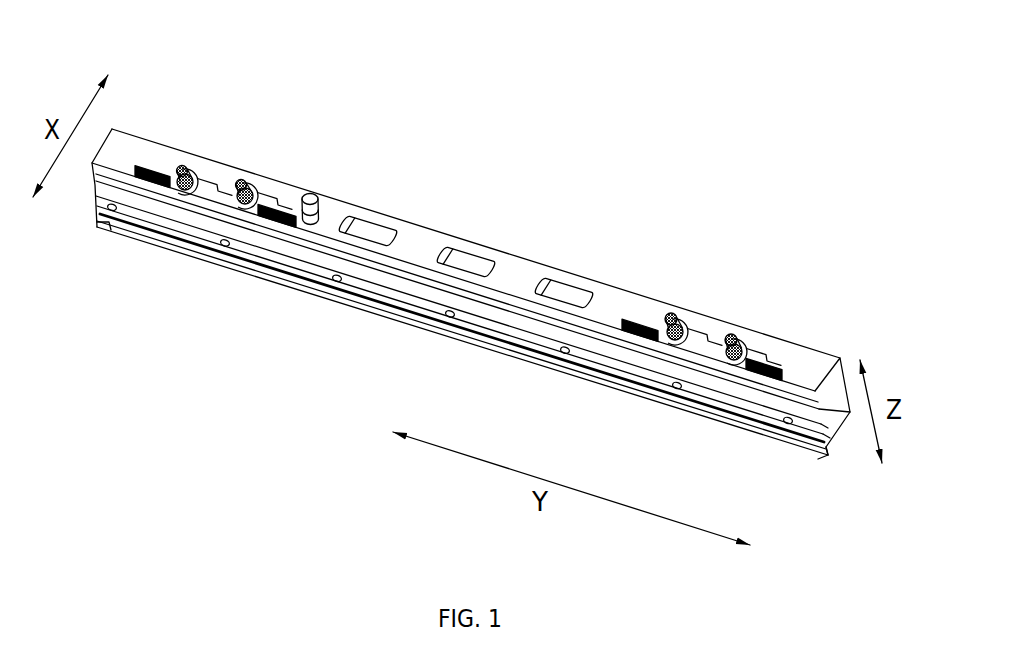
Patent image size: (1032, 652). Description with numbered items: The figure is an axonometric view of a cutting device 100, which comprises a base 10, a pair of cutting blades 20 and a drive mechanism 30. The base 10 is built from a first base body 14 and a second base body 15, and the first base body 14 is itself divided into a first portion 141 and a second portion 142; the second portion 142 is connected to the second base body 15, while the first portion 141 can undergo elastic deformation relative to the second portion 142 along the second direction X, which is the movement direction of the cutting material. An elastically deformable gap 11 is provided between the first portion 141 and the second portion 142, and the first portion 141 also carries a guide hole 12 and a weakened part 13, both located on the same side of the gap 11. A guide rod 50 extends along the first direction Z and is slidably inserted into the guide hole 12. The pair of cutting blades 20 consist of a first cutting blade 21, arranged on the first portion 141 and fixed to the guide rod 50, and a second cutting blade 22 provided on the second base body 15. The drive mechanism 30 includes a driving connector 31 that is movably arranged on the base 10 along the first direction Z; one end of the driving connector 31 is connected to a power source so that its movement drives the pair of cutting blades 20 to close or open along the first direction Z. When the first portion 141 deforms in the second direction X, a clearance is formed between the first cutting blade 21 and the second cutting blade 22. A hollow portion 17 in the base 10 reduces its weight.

The cutting device 100 is at (494, 58).
The base 10 is at (841, 340).
The gap 11 is at (218, 188).
The guide hole 12 is at (682, 317).
The weakened part 13 is at (150, 193).
The first base body 14 is at (167, 155).
The first portion 141 is at (204, 194).
The second portion 142 is at (280, 186).
The second base body 15 is at (832, 414).
The hollow portion 17 is at (397, 218).
The pair of cutting blades 20 is at (324, 379).
The first cutting blade 21 is at (280, 263).
The second cutting blade 22 is at (368, 307).
The drive mechanism 30 is at (332, 190).
The driving connector 31 is at (318, 197).
The guide rod 50 is at (181, 163).